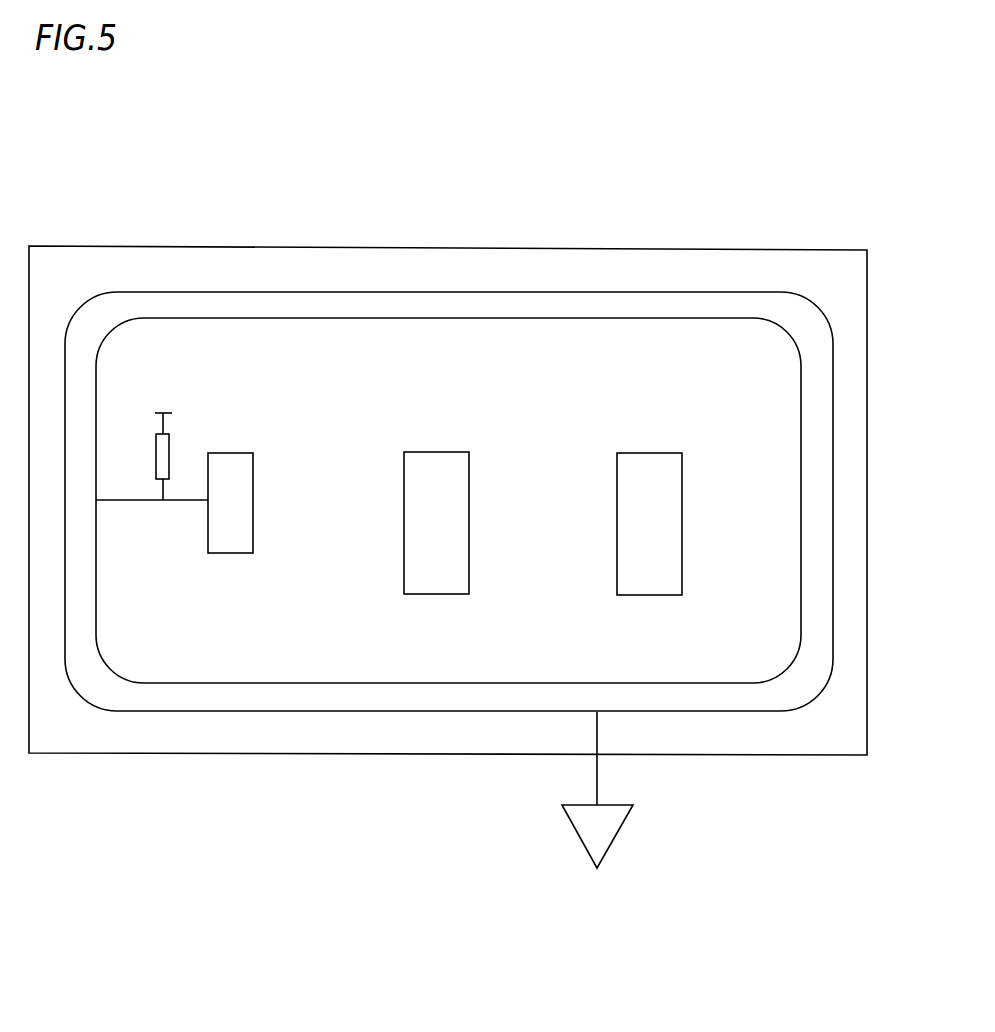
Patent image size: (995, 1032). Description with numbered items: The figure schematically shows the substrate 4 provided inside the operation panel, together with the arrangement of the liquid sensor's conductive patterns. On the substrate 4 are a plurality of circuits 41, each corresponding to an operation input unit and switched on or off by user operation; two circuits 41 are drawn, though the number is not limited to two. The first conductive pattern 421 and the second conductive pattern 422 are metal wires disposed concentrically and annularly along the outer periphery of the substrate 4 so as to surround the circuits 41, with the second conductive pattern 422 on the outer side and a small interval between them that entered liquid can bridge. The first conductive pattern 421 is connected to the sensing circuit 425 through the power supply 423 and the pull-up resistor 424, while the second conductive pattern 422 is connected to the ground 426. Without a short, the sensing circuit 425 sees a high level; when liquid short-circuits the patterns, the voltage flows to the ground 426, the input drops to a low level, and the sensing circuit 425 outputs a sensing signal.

The substrate 4 is at (560, 250).
The circuits 41 is at (428, 452).
The first conductive pattern 421 is at (584, 319).
The second conductive pattern 422 is at (585, 292).
The power supply 423 is at (165, 411).
The resistor 424 is at (171, 448).
The sensing circuit 425 is at (254, 464).
The ground 426 is at (599, 800).